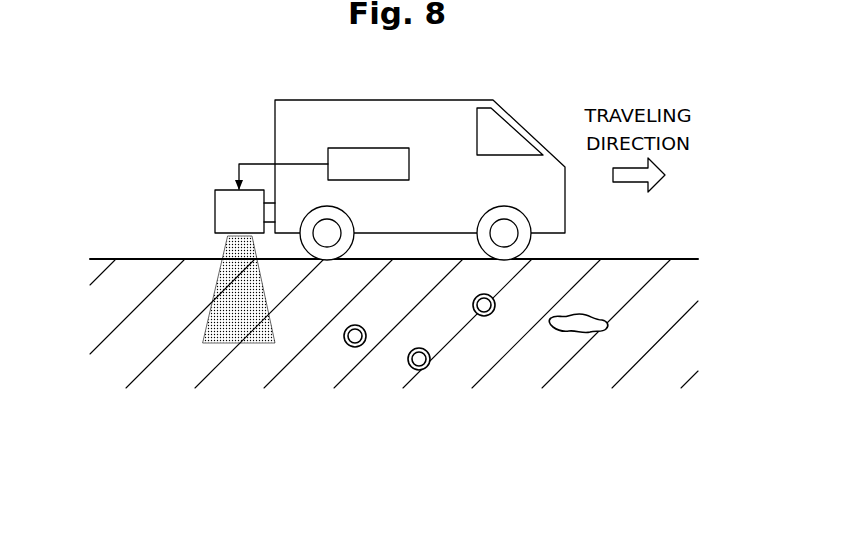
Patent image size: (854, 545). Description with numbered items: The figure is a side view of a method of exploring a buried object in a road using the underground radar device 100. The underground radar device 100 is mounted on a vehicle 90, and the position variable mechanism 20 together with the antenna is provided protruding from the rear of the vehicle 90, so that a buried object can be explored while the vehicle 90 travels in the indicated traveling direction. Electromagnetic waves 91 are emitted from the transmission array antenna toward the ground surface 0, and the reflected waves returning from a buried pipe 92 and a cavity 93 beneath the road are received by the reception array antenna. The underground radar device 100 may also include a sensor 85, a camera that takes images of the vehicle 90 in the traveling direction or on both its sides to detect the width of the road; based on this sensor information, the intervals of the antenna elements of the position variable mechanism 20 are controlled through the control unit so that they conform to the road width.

The underground radar device 100 is at (235, 128).
The vehicle 90 is at (381, 100).
The sensor 85 is at (393, 148).
The position variable mechanism 20 is at (222, 207).
The ground surface 0 is at (651, 259).
The electromagnetic waves 91 is at (218, 277).
The buried pipe 92 is at (355, 347).
The cavity 93 is at (556, 328).